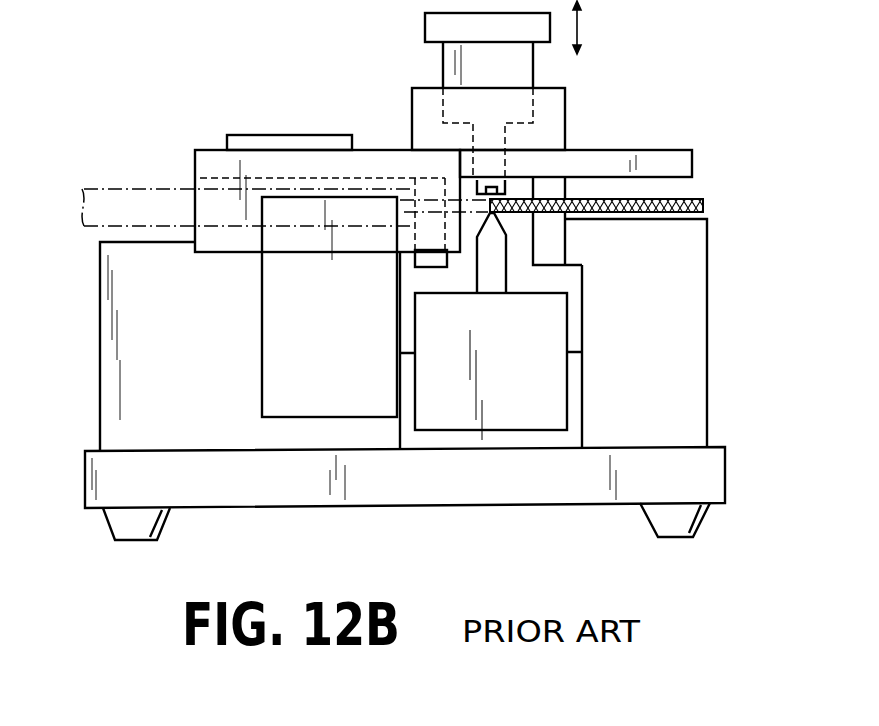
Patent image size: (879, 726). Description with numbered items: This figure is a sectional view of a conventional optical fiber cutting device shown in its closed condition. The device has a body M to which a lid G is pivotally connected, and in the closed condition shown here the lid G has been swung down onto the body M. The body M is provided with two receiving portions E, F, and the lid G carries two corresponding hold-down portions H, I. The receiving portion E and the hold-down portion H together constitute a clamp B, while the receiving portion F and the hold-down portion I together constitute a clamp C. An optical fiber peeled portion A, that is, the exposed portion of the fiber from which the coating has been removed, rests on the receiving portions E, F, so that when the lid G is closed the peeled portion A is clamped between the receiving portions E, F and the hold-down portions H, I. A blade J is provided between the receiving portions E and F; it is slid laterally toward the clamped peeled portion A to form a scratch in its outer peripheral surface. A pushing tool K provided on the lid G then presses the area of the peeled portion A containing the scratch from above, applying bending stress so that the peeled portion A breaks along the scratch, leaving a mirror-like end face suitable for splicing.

The body M is at (100, 343).
The clamp B is at (285, 229).
The hold-down portion H is at (425, 192).
The receiving portion E is at (420, 267).
The pushing tool K is at (507, 182).
The lid G is at (649, 150).
The optical fiber peeled portion A is at (677, 199).
The hold-down portion I is at (557, 185).
The receiving portion F is at (560, 240).
The clamp C is at (660, 233).
The blade J is at (510, 277).